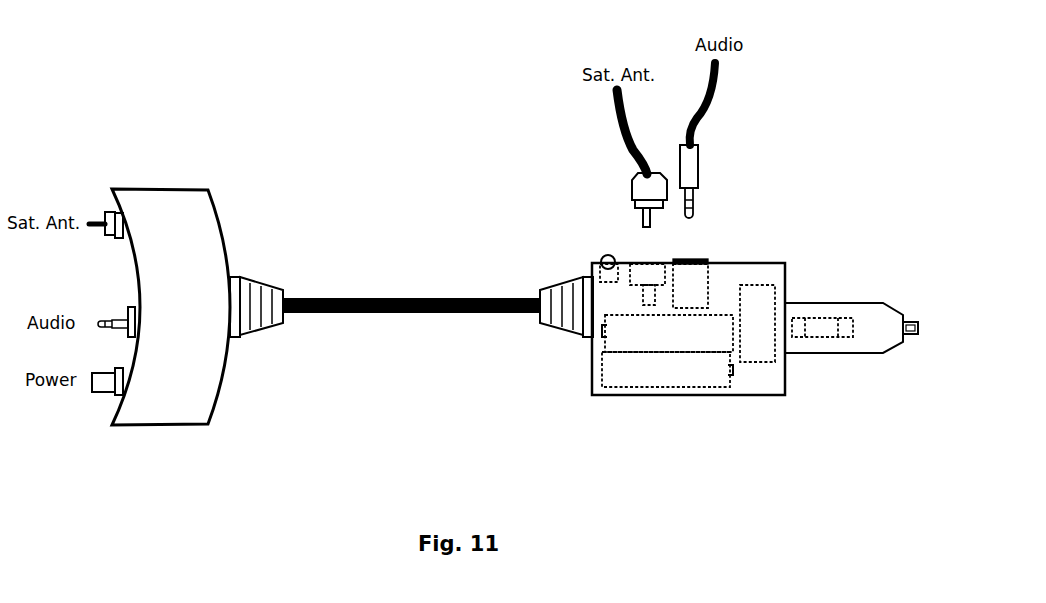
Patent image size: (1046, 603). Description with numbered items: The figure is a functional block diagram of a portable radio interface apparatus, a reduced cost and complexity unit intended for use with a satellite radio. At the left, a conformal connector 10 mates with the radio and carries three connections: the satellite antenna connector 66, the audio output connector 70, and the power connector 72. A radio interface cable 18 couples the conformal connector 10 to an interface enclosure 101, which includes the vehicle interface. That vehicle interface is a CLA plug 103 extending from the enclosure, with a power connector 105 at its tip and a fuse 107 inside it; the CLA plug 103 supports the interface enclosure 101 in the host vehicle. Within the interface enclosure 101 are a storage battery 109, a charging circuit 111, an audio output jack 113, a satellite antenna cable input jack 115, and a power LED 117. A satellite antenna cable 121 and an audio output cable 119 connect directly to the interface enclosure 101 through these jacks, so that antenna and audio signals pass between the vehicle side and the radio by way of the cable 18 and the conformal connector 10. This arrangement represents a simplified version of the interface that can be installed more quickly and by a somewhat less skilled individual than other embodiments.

The conformal connector 10 is at (220, 226).
The satellite antenna connector 66 is at (108, 211).
The audio output connector 70 is at (118, 318).
The power connector 72 is at (110, 370).
The radio interface cable 18 is at (373, 313).
The interface enclosure 101 is at (615, 396).
The CLA plug 103 is at (858, 303).
The power connector 105 is at (912, 322).
The fuse 107 is at (812, 337).
The storage battery 109 is at (660, 388).
The charging circuit 111 is at (757, 363).
The audio output jack 113 is at (700, 258).
The satellite antenna cable input jack 115 is at (653, 263).
The power LED 117 is at (603, 256).
The audio output cable 119 is at (700, 155).
The satellite antenna cable 121 is at (633, 178).